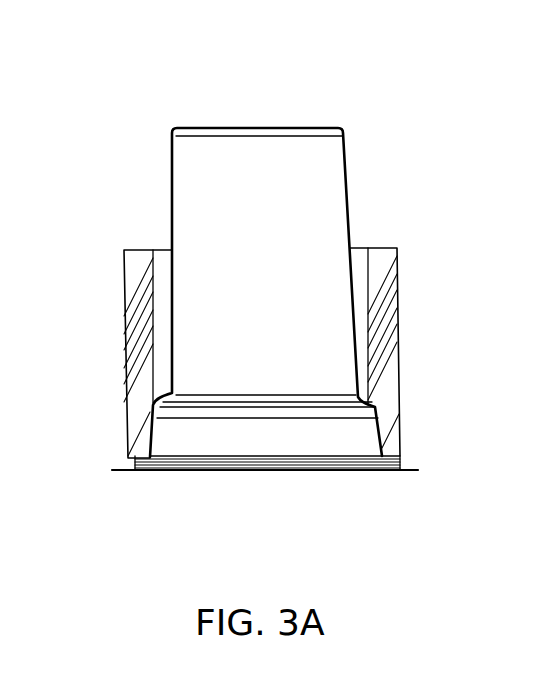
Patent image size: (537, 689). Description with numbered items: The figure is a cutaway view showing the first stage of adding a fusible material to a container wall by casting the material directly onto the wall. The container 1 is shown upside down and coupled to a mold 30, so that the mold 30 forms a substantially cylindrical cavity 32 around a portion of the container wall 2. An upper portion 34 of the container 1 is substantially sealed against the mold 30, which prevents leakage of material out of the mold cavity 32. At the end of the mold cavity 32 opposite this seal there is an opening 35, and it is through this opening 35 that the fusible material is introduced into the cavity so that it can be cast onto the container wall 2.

The container 1 is at (275, 183).
The container wall 2 is at (348, 183).
The mold 30 is at (387, 333).
The mold cavity 32 is at (358, 305).
The upper portion of the container 34 is at (400, 407).
The opening 35 is at (163, 248).